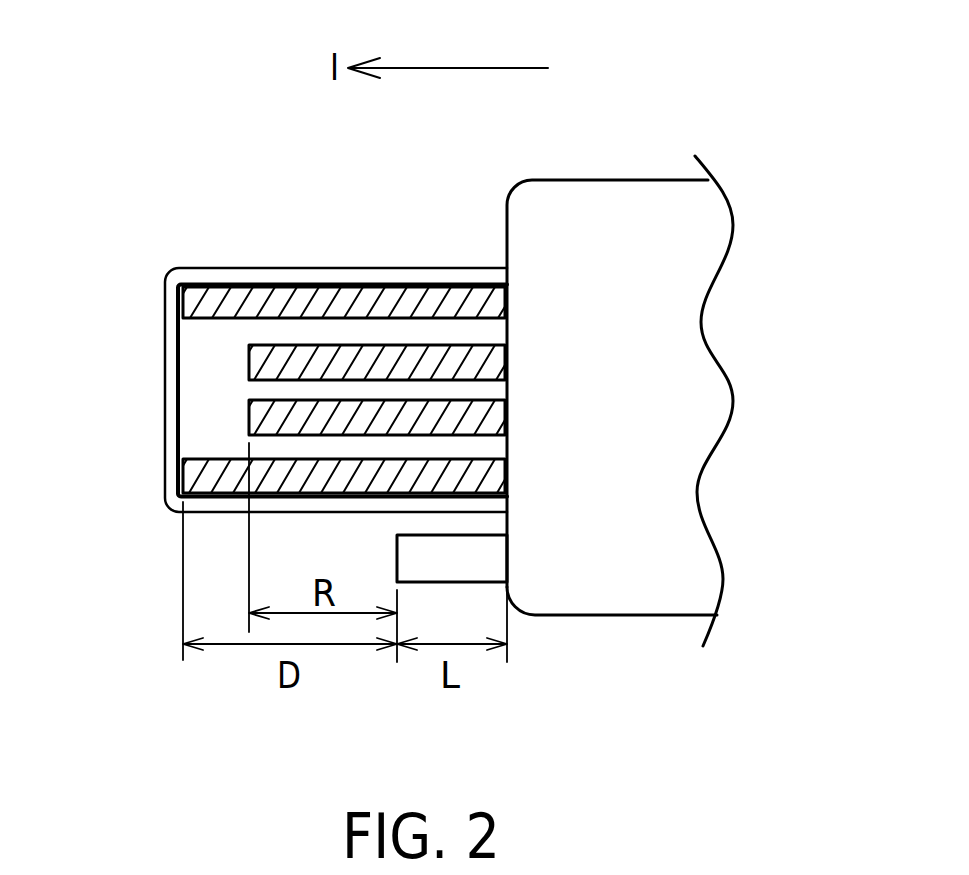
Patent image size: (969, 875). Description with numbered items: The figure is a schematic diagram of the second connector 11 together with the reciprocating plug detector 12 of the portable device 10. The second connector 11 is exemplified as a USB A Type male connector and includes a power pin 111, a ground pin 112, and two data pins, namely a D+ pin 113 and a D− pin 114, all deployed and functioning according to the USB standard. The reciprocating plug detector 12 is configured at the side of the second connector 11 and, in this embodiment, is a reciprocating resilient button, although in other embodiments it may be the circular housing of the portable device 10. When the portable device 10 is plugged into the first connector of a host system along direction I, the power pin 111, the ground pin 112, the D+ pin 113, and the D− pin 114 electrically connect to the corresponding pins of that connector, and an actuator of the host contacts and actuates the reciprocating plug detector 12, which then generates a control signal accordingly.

The portable device 10 is at (752, 100).
The second connector 11 is at (327, 268).
The power pin 111 is at (193, 303).
The ground pin 112 is at (193, 480).
The D+ pin 113 is at (257, 360).
The D− pin 114 is at (260, 415).
The reciprocating plug detector 12 is at (485, 553).